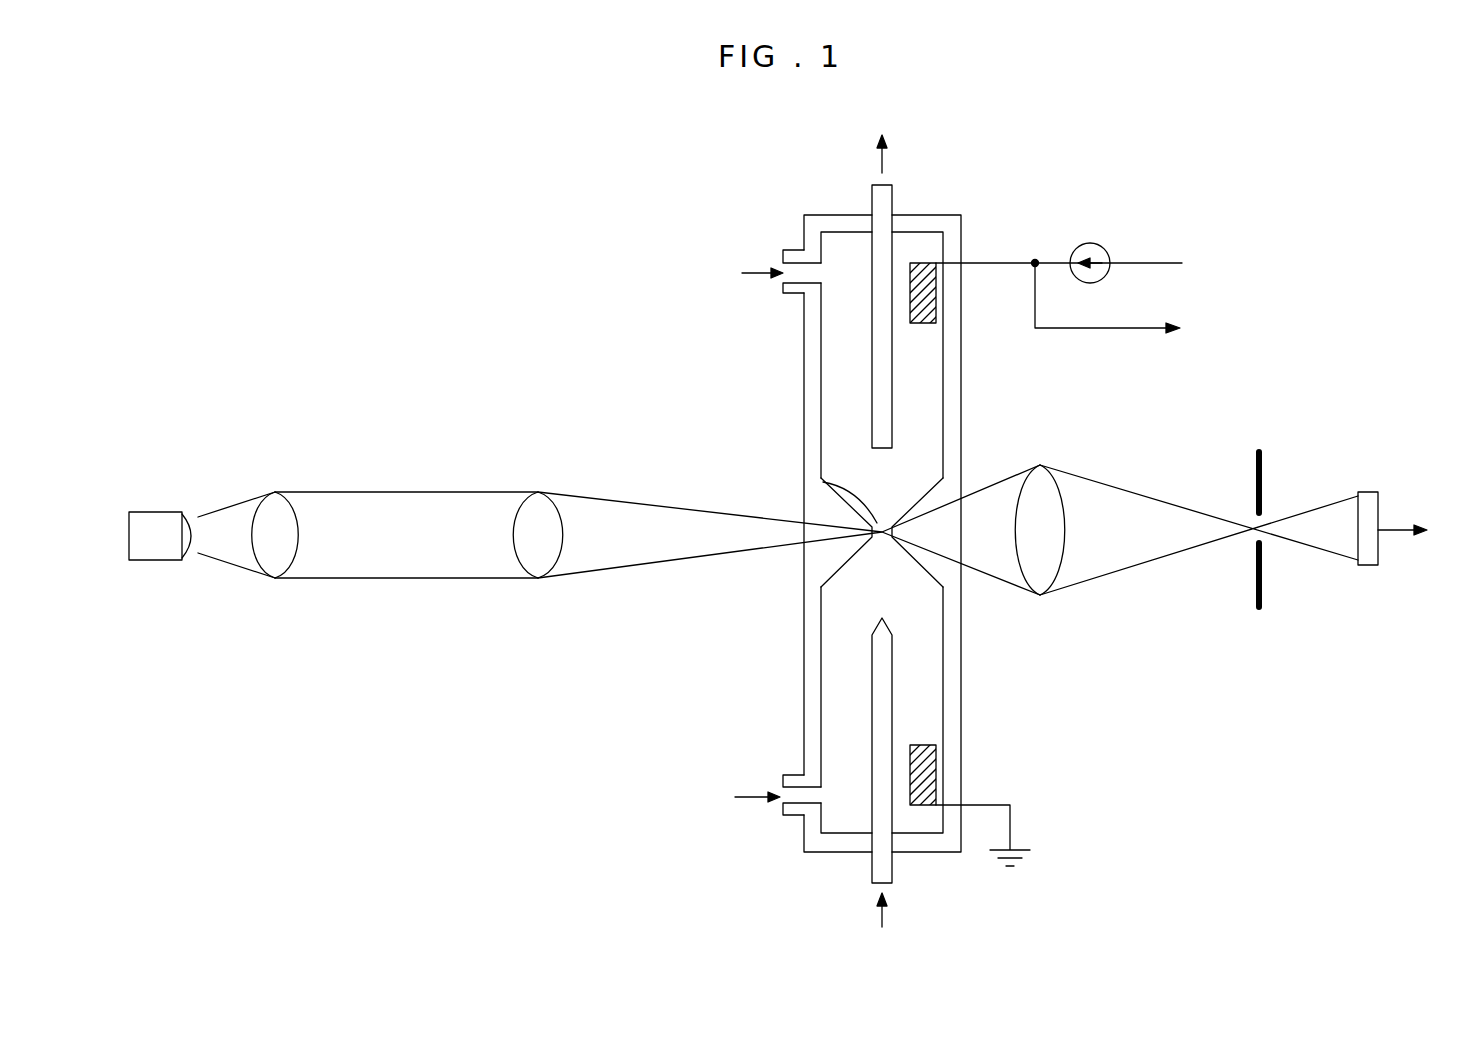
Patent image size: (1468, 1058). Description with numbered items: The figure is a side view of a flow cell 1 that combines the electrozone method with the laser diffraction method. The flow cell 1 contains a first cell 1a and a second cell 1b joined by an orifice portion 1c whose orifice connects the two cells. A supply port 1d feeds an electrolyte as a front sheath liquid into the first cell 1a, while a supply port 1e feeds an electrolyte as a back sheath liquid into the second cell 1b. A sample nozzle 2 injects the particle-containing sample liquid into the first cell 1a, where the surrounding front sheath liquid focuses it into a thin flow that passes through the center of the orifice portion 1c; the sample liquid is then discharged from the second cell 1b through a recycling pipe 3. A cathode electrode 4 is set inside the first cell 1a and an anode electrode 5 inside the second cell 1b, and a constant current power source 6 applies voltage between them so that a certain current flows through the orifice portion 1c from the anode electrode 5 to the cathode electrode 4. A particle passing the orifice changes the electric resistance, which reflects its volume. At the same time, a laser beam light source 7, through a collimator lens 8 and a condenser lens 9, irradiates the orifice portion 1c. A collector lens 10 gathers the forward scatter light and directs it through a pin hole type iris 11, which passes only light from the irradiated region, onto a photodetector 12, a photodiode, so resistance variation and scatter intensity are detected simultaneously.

The flow cell 1 is at (789, 182).
The first cell 1a is at (830, 689).
The second cell 1b is at (840, 395).
The orifice portion 1c is at (821, 483).
The supply port 1d is at (790, 818).
The supply port 1e is at (800, 250).
The sample nozzle 2 is at (868, 868).
The recycling pipe 3 is at (873, 195).
The cathode electrode 4 is at (937, 773).
The anode electrode 5 is at (940, 297).
The constant current power source 6 is at (1108, 250).
The laser beam light source 7 is at (162, 512).
The collimator lens 8 is at (276, 508).
The condenser lens 9 is at (538, 508).
The collector lens 10 is at (1040, 580).
The pin hole type iris 11 is at (1258, 607).
The photodetector 12 is at (1373, 515).